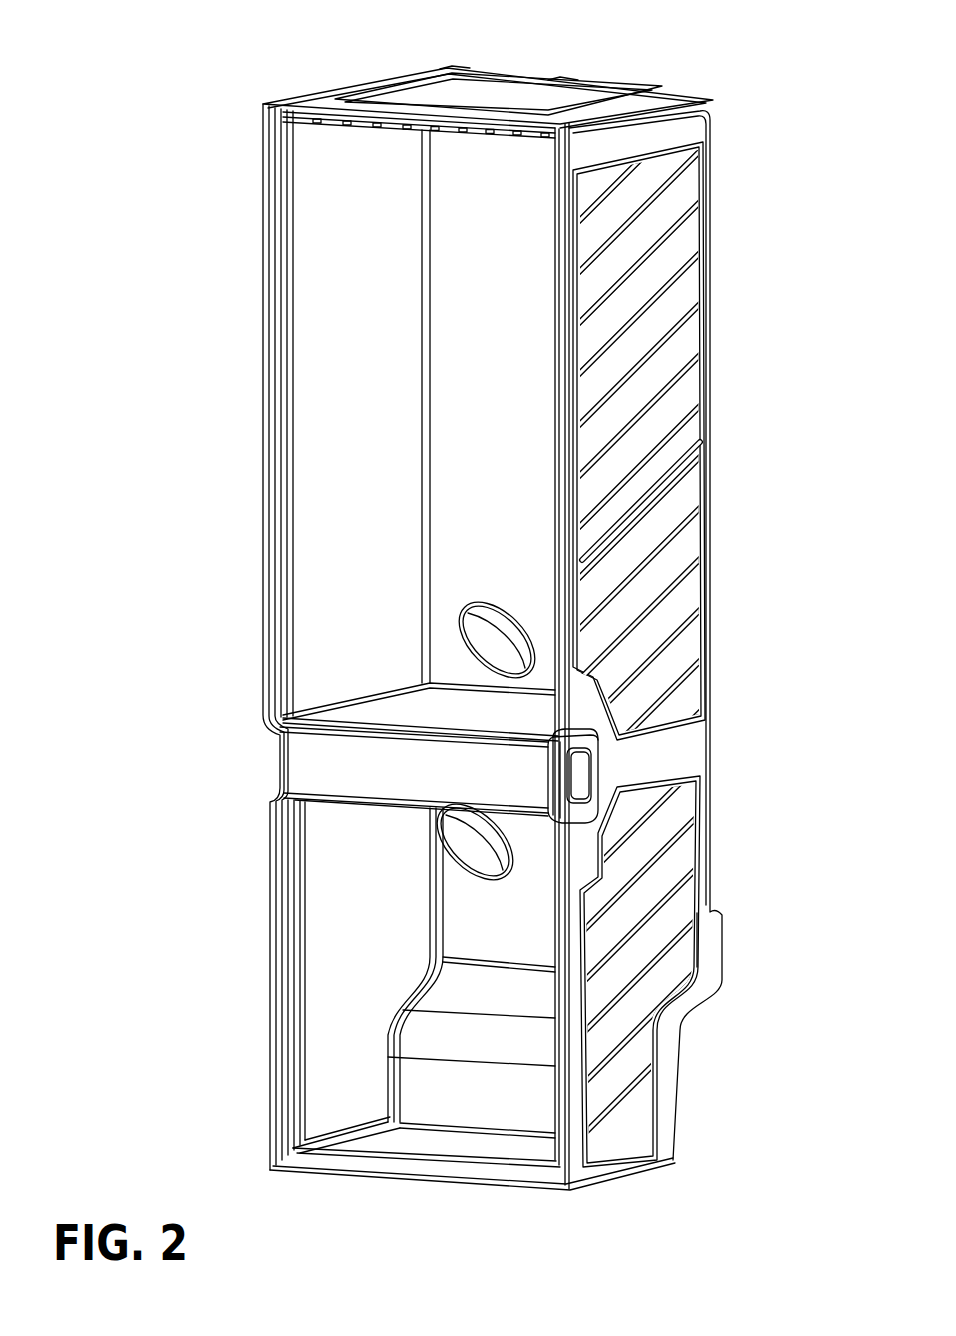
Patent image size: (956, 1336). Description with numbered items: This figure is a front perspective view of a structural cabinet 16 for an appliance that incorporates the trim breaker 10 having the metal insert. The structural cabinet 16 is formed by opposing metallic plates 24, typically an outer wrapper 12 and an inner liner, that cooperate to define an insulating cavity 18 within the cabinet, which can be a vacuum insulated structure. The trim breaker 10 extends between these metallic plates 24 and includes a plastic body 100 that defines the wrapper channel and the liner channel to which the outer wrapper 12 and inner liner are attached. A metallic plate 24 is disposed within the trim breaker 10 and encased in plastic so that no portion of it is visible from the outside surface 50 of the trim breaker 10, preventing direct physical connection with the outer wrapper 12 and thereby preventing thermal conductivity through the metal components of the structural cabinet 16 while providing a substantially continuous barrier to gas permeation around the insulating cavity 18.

The trim breaker 10 is at (582, 440).
The outer wrapper 12 is at (628, 243).
The structural cabinet 16 is at (396, 68).
The insulating cavity 18 is at (640, 500).
The plastic body 100 is at (585, 557).
The outside surface 50 is at (278, 730).
The metallic plate 24 is at (275, 932).